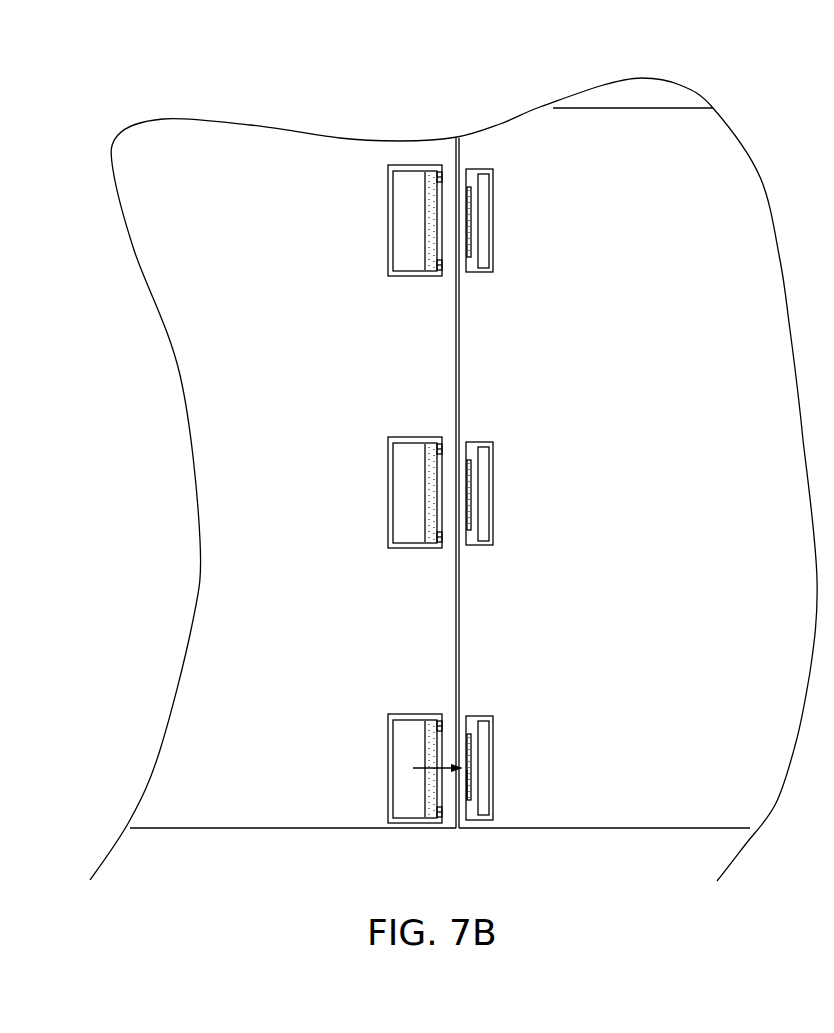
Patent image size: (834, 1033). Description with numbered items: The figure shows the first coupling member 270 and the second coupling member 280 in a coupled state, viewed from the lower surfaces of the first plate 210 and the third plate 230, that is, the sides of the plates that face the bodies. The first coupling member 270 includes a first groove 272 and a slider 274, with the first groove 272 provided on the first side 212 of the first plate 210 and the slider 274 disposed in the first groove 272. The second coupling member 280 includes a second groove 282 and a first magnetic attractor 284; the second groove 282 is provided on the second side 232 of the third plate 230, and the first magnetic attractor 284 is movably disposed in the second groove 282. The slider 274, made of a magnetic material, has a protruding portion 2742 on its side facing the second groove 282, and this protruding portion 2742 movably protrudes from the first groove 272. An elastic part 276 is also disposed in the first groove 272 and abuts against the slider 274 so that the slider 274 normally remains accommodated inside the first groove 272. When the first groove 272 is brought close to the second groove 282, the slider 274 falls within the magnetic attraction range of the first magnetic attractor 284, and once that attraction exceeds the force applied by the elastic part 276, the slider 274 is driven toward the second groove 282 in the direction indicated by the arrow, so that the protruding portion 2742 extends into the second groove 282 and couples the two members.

The first plate 210 is at (262, 820).
The third plate 230 is at (628, 820).
The first side 212 is at (443, 603).
The second side 232 is at (480, 604).
The first coupling member 270 is at (353, 770).
The first groove 272 is at (400, 740).
The slider 274 is at (430, 700).
The protruding portion 2742 is at (467, 787).
The elastic part 276 is at (438, 823).
The second coupling member 280 is at (552, 738).
The second groove 282 is at (473, 700).
The first magnetic attractor 284 is at (492, 740).